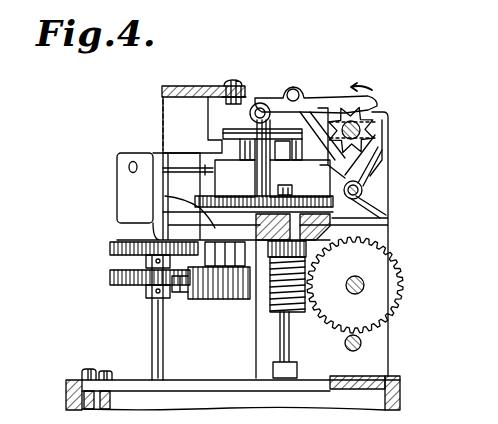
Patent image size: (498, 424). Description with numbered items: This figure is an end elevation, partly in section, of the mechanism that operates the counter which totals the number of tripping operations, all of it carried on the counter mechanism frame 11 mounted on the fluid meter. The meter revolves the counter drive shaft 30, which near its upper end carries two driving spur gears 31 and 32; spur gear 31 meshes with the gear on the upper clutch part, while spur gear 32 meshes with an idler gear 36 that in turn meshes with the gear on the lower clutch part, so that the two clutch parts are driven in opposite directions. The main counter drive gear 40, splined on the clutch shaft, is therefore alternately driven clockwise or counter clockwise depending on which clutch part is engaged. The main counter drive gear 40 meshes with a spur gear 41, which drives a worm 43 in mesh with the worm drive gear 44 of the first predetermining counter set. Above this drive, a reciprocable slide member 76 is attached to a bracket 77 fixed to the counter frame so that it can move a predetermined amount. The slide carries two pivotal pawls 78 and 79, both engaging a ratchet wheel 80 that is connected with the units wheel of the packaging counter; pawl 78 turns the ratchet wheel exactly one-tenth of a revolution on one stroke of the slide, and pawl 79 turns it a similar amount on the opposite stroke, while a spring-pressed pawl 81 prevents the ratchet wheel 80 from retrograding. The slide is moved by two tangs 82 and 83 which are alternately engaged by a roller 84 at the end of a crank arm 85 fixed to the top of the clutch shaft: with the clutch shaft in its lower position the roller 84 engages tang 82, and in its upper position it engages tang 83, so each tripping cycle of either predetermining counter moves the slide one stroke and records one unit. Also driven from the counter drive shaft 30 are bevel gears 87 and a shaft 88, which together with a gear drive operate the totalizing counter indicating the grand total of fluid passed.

The counter mechanism frame 11 is at (378, 229).
The counter drive shaft 30 is at (153, 337).
The driving spur gear 31 is at (110, 247).
The driving spur gear 32 is at (116, 284).
The idler gear 36 is at (218, 300).
The main counter drive gear 40 is at (205, 211).
The spur gear 41 is at (335, 216).
The worm 43 is at (280, 305).
The worm drive gear 44 is at (400, 289).
The reciprocable slide member 76 is at (242, 88).
The bracket 77 is at (190, 86).
The pivotal pawl 78 is at (322, 101).
The pivotal pawl 79 is at (341, 163).
The ratchet wheel 80 is at (370, 124).
The spring-pressed pawl 81 is at (385, 161).
The tang 82 is at (258, 160).
The tang 83 is at (205, 146).
The roller 84 is at (284, 152).
The crank arm 85 is at (257, 123).
The bevel gears 87 is at (160, 151).
The shaft 88 is at (175, 173).